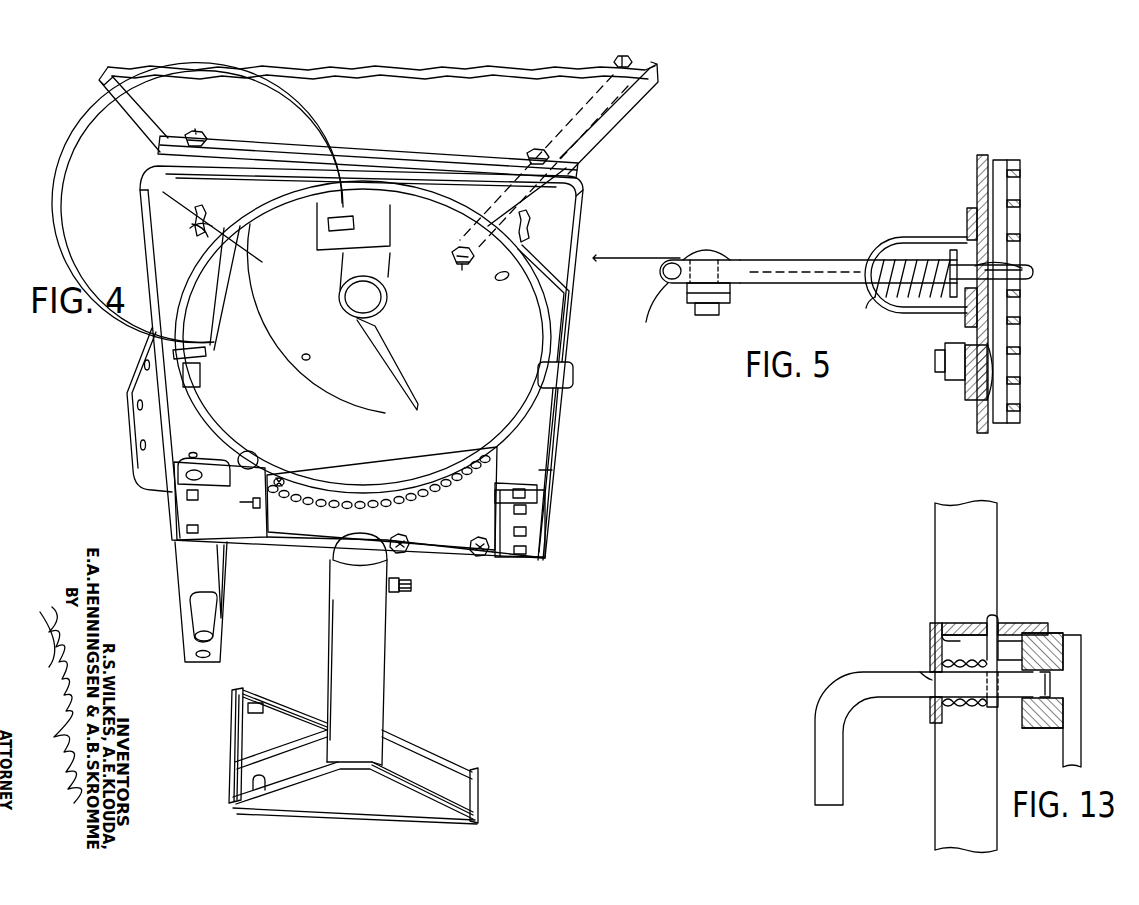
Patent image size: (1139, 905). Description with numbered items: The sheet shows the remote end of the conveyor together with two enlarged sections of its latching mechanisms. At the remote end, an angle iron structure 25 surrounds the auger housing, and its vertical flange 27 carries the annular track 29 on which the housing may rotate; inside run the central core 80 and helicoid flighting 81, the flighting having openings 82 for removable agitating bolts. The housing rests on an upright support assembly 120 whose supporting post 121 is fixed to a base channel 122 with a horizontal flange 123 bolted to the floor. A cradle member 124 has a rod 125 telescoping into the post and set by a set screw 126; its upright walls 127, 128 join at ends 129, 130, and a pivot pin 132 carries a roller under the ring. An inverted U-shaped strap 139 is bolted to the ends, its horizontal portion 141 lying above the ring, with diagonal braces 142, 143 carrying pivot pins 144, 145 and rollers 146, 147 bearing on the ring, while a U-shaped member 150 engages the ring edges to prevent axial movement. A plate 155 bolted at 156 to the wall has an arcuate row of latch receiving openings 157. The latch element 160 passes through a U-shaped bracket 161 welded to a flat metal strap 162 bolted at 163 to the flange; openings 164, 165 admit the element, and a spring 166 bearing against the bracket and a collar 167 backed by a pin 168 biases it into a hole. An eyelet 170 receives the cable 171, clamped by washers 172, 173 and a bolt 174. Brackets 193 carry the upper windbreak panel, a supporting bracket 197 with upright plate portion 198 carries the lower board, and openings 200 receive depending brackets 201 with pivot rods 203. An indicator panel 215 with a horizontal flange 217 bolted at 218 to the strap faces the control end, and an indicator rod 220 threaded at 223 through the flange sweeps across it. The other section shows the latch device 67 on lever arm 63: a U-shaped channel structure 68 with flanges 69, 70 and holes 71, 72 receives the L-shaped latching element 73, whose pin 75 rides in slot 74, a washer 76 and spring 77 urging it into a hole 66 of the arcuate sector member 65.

In FIG. 4, the angle iron structure 25 is at (514, 405).
In FIG. 4, the vertical flange 27 is at (530, 327).
In FIG. 5, the vertical flange 27 is at (977, 186).
In FIG. 4, the annular track 29 is at (430, 190).
In FIG. 13, the lever arm 63 is at (985, 530).
In FIG. 13, the arcuate sector member 65 is at (1062, 652).
In FIG. 13, the holes 66 is at (1072, 672).
In FIG. 13, the latch device 67 is at (1031, 621).
In FIG. 13, the U-shaped channel structure 68 is at (940, 624).
In FIG. 13, the flange 69 is at (928, 645).
In FIG. 13, the flange 70 is at (1022, 664).
In FIG. 13, the hole 71 is at (925, 672).
In FIG. 13, the hole 72 is at (1050, 690).
In FIG. 13, the L-shaped latching element 73 is at (898, 692).
In FIG. 13, the slot 74 is at (988, 620).
In FIG. 13, the pin 75 is at (999, 625).
In FIG. 13, the washer 76 is at (985, 662).
In FIG. 13, the spring 77 is at (968, 709).
In FIG. 4, the central core 80 is at (387, 282).
In FIG. 4, the helicoid flighting 81 is at (360, 392).
In FIG. 4, the openings 82 is at (310, 356).
In FIG. 4, the upright support assembly 120 is at (384, 662).
In FIG. 4, the supporting post 121 is at (365, 700).
In FIG. 4, the base channel 122 is at (396, 763).
In FIG. 4, the horizontal flange 123 is at (460, 790).
In FIG. 4, the cradle member 124 is at (519, 529).
In FIG. 4, the rod 125 is at (355, 548).
In FIG. 4, the set screw 126 is at (408, 585).
In FIG. 4, the upright wall 127 is at (535, 470).
In FIG. 4, the upright wall 128 is at (507, 552).
In FIG. 4, the end 129 is at (540, 492).
In FIG. 4, the end 130 is at (168, 482).
In FIG. 4, the pivot pin 132 is at (255, 508).
In FIG. 4, the U-shaped strap 139 is at (585, 220).
In FIG. 4, the horizontal portion 141 is at (362, 162).
In FIG. 4, the diagonal brace 142 is at (578, 200).
In FIG. 4, the diagonal brace 143 is at (160, 197).
In FIG. 4, the pivot pin 144 is at (540, 233).
In FIG. 4, the pivot pin 145 is at (188, 226).
In FIG. 4, the roller 146 is at (522, 168).
In FIG. 4, the roller 147 is at (226, 215).
In FIG. 4, the U-shaped member 150 is at (573, 366).
In FIG. 4, the plate 155 is at (480, 503).
In FIG. 5, the plate 155 is at (1022, 208).
In FIG. 4, the bolt 156 is at (406, 545).
In FIG. 4, the latch receiving openings 157 is at (305, 500).
In FIG. 5, the latch receiving openings 157 is at (1022, 240).
In FIG. 4, the latch element 160 is at (280, 480).
In FIG. 5, the latch element 160 is at (800, 260).
In FIG. 5, the U-shaped bracket 161 is at (897, 238).
In FIG. 5, the flat metal strap 162 is at (975, 323).
In FIG. 5, the bolt 163 is at (945, 368).
In FIG. 5, the opening 164 is at (1030, 279).
In FIG. 5, the opening 165 is at (1024, 270).
In FIG. 5, the spring 166 is at (868, 294).
In FIG. 5, the collar 167 is at (966, 236).
In FIG. 5, the pin 168 is at (951, 291).
In FIG. 5, the eyelet 170 is at (732, 262).
In FIG. 5, the cable 171 is at (658, 257).
In FIG. 5, the washer 172 is at (705, 250).
In FIG. 5, the washer 173 is at (730, 296).
In FIG. 5, the bolt 174 is at (715, 315).
In FIG. 4, the upright bracket 193 is at (127, 405).
In FIG. 4, the supporting bracket 197 is at (270, 700).
In FIG. 4, the upright plate portion 198 is at (229, 748).
In FIG. 4, the openings 200 is at (192, 497).
In FIG. 4, the depending bracket 201 is at (214, 578).
In FIG. 4, the pivot rod 203 is at (207, 610).
In FIG. 4, the indicator panel 215 is at (606, 103).
In FIG. 4, the horizontal flange 217 is at (297, 150).
In FIG. 4, the bolt 218 is at (197, 135).
In FIG. 4, the indicator rod 220 is at (635, 62).
In FIG. 4, the threads 223 is at (465, 258).